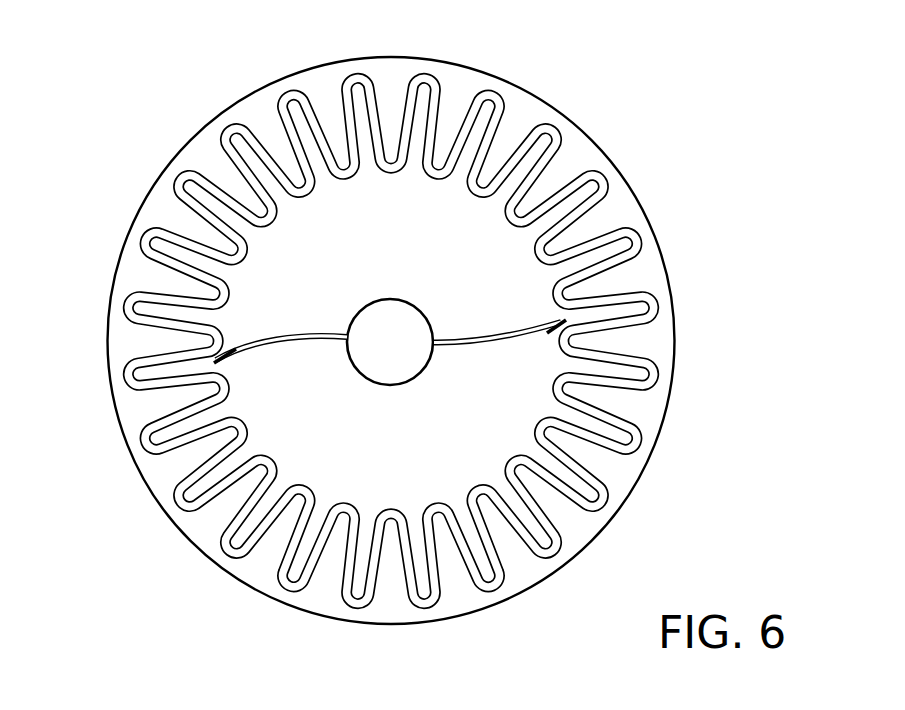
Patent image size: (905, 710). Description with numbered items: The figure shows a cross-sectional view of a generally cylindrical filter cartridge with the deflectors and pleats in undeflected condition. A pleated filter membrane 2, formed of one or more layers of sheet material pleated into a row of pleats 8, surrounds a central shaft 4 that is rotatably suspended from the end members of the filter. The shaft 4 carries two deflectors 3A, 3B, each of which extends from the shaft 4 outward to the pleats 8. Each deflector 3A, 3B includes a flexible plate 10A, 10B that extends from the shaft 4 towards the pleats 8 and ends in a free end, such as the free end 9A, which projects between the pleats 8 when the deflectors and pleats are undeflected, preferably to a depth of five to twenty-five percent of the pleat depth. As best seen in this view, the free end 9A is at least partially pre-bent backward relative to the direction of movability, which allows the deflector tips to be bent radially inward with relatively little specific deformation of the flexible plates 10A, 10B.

The filter membrane 2 is at (424, 316).
The pleats 8 is at (586, 173).
The shaft 4 is at (388, 298).
The deflector 3A is at (566, 396).
The deflector 3B is at (218, 287).
The flexible plate 10A is at (497, 353).
The flexible plate 10B is at (283, 332).
The free end 9A is at (213, 363).